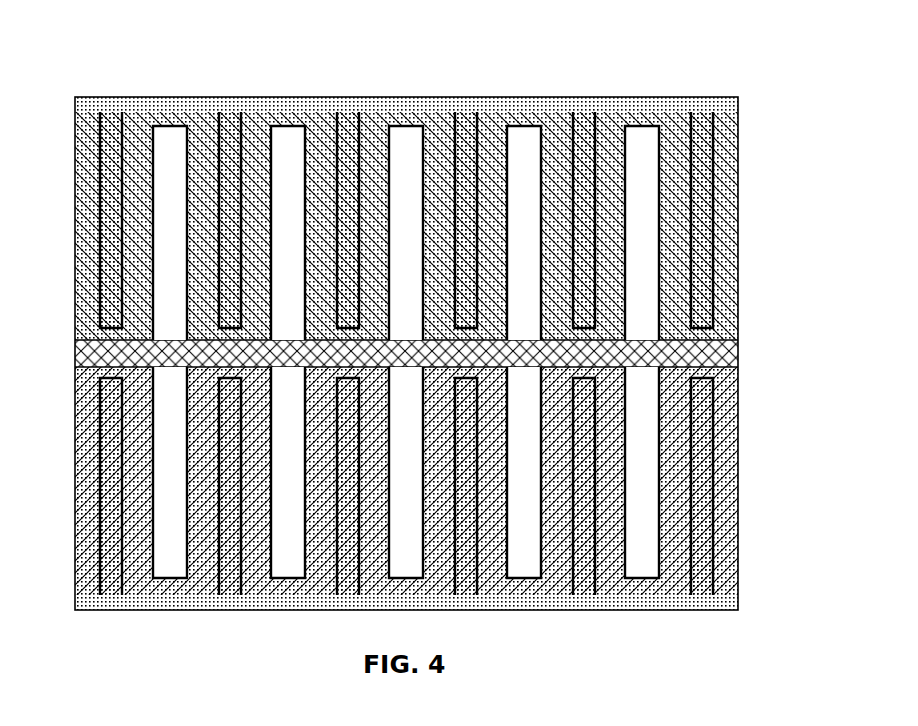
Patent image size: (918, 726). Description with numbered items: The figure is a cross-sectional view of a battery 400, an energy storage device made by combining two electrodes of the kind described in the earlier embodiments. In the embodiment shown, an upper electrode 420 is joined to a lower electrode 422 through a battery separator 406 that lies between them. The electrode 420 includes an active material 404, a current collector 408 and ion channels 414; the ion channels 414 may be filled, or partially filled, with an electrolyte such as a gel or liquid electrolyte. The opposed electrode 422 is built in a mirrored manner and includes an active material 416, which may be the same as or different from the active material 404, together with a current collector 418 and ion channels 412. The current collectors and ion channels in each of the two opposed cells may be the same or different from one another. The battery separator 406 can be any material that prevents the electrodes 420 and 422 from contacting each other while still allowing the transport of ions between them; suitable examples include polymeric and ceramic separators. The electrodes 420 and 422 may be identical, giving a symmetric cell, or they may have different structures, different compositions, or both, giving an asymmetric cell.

The battery 400 is at (609, 627).
The active material 404 is at (88, 193).
The battery separator 406 is at (730, 355).
The current collector 408 is at (230, 123).
The ion channels 412 is at (290, 543).
The ion channels 414 is at (290, 163).
The active material 416 is at (87, 515).
The current collector 418 is at (232, 558).
The electrode 420 is at (743, 97).
The electrode 422 is at (743, 610).